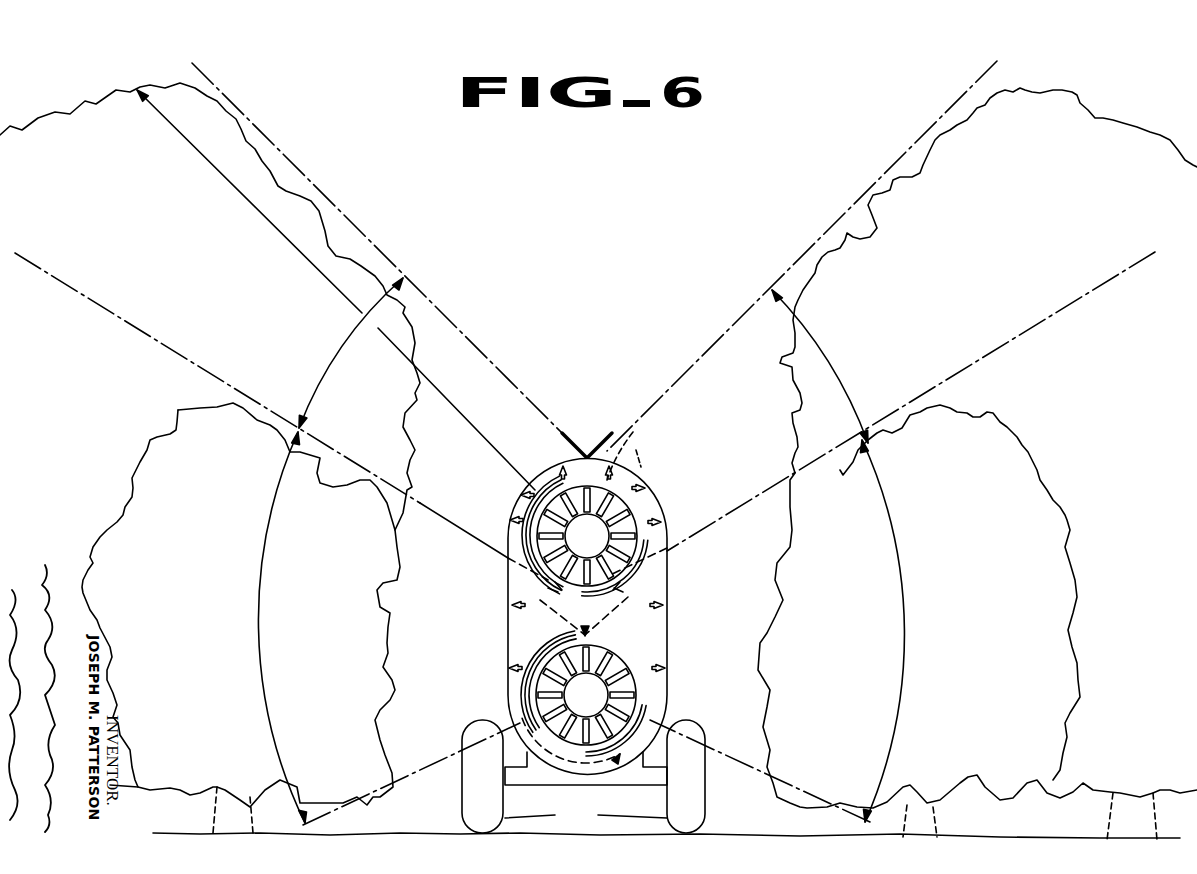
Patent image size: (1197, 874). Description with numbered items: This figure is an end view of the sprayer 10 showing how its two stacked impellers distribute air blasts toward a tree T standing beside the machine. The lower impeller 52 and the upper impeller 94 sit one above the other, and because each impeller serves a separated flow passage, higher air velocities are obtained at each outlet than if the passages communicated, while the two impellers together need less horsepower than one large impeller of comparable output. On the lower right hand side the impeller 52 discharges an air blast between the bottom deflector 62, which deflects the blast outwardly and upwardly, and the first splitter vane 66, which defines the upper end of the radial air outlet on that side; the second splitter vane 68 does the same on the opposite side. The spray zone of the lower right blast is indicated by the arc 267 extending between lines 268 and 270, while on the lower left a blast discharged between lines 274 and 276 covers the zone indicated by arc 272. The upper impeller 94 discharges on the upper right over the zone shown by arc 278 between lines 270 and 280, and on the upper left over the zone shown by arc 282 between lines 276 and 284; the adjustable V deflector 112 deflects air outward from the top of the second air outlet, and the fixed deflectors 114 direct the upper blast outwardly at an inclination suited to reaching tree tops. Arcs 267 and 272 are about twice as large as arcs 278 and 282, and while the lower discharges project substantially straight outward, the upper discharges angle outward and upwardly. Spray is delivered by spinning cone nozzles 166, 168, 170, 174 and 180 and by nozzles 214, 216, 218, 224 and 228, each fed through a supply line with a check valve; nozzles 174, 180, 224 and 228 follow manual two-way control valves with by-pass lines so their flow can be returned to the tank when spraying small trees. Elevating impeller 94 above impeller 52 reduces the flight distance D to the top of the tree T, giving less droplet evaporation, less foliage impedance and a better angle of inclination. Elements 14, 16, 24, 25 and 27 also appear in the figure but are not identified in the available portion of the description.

The sprayer 10 is at (571, 616).
The frame 14 is at (657, 787).
The axle 16 is at (586, 816).
The housing 24 is at (670, 633).
The lower fan scroll 25 is at (537, 702).
The upper fan scroll 27 is at (530, 487).
The impeller 52 is at (606, 667).
The bottom deflector 62 is at (571, 747).
The first splitter vane 66 is at (624, 592).
The second splitter vane 68 is at (546, 596).
The impeller 94 is at (590, 533).
The adjustable V deflector 112 is at (655, 453).
The fixed deflectors 114 is at (604, 433).
The nozzle 166 is at (508, 667).
The nozzle 168 is at (511, 603).
The nozzle 170 is at (509, 521).
The nozzle 174 is at (519, 496).
The nozzle 180 is at (558, 465).
The nozzle 214 is at (667, 663).
The nozzle 216 is at (666, 602).
The nozzle 218 is at (662, 521).
The nozzle 224 is at (648, 481).
The nozzle 228 is at (642, 451).
The arc 267 is at (905, 613).
The line 268 is at (780, 793).
The line 270 is at (928, 392).
The arc 272 is at (262, 606).
The line 274 is at (325, 806).
The line 276 is at (218, 383).
The arc 278 is at (822, 348).
The line 280 is at (838, 214).
The arc 282 is at (345, 343).
The line 284 is at (322, 199).
The flight distance D is at (250, 206).
The tree T is at (100, 100).